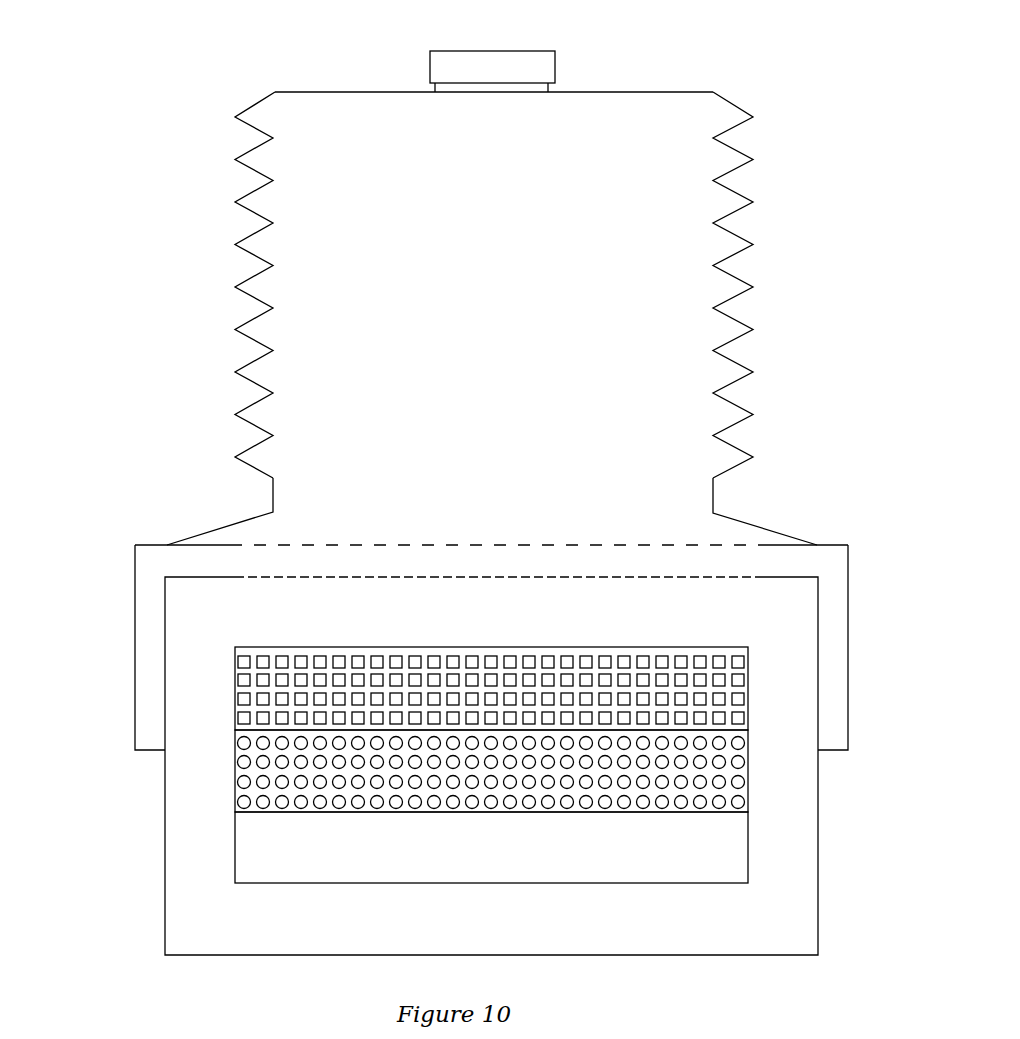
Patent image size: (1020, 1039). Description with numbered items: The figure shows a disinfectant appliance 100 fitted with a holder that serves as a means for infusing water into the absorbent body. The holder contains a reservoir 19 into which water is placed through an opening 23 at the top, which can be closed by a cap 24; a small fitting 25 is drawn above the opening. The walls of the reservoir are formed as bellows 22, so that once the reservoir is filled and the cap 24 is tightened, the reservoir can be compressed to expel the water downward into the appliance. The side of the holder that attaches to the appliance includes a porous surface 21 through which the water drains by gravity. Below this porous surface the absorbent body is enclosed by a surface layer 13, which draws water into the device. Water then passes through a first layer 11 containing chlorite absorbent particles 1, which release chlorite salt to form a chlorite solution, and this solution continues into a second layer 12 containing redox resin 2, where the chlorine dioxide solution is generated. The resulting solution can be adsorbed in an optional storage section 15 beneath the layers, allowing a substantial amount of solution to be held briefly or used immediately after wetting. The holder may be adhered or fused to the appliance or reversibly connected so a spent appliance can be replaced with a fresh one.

The appliance 100 is at (176, 198).
The opening 23 is at (245, 296).
The bellows 22 is at (283, 494).
The cap 24 is at (555, 88).
The connector 25 is at (430, 75).
The porous surface 21 is at (235, 578).
The reservoir 19 is at (145, 625).
The surface layer 13 is at (195, 922).
The storage section 15 is at (235, 862).
The first layer 11 is at (235, 708).
The chlorite absorbent particles 1 is at (240, 718).
The second layer 12 is at (235, 788).
The redox resin 2 is at (245, 803).